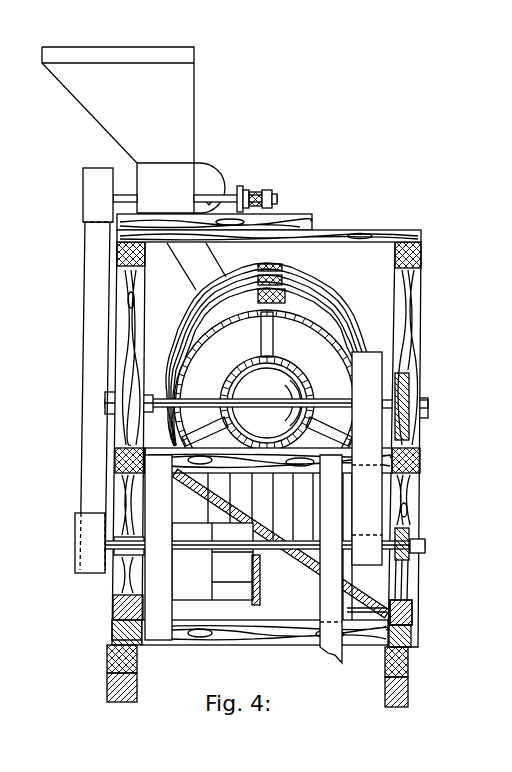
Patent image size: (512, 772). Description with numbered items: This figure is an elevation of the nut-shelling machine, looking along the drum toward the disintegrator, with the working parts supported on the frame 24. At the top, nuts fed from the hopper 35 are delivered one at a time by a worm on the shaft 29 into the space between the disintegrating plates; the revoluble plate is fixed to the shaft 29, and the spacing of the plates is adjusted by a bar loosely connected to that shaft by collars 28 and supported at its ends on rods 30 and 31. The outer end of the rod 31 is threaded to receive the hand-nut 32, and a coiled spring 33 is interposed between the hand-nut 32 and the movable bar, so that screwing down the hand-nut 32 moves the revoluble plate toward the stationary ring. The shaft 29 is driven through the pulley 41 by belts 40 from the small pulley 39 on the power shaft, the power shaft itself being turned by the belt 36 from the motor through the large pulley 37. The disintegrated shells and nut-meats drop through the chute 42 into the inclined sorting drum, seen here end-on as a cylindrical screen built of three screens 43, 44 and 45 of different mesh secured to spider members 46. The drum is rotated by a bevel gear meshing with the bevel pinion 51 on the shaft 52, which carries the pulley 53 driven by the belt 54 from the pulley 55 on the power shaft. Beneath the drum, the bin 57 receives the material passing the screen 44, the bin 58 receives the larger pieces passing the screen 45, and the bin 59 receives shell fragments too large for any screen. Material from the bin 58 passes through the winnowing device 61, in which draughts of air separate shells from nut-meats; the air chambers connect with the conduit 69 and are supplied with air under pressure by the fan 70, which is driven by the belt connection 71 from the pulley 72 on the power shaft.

The frame 24 is at (422, 277).
The collars 28 is at (247, 190).
The shaft 29 is at (276, 197).
The rod 30 is at (277, 367).
The rod 31 is at (312, 402).
The hand-nut 32 is at (264, 193).
The coiled spring 33 is at (254, 194).
The hopper 35 is at (172, 87).
The belt 36 is at (340, 648).
The pulley 37 is at (410, 613).
The pulley 39 is at (75, 520).
The belts 40 is at (93, 280).
The pulley 41 is at (83, 178).
The chute 42 is at (198, 270).
The screen 43 is at (317, 287).
The screen 44 is at (330, 300).
The screen 45 is at (333, 323).
The spider members 46 is at (290, 306).
The bevel pinion 51 is at (240, 196).
The shaft 52 is at (200, 403).
The pulley 53 is at (383, 372).
The belt 54 is at (372, 487).
The pulley 55 is at (408, 537).
The bin 57 is at (278, 207).
The bin 58 is at (420, 550).
The bin 59 is at (273, 500).
The winnowing device 61 is at (270, 602).
The conduit 69 is at (193, 600).
The fan 70 is at (140, 583).
The belt connection 71 is at (155, 622).
The pulley 72 is at (142, 612).